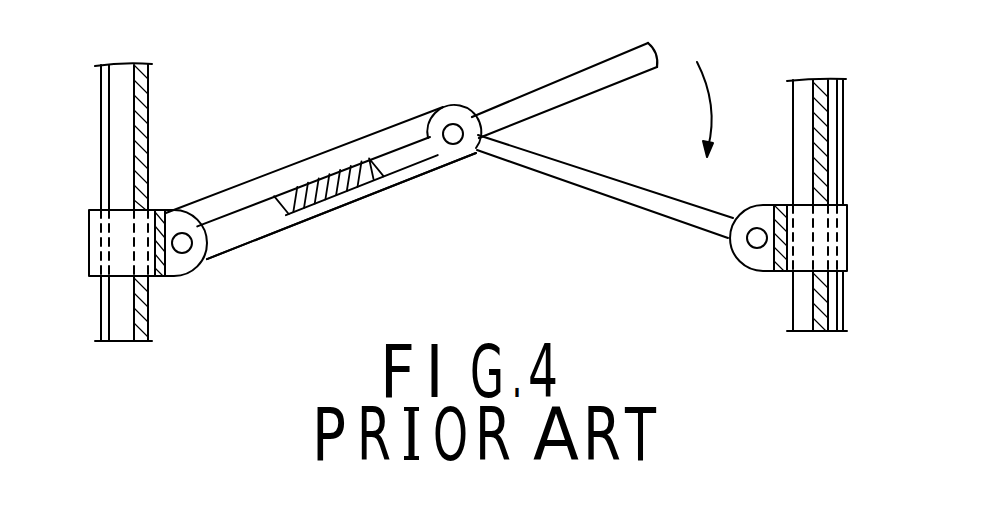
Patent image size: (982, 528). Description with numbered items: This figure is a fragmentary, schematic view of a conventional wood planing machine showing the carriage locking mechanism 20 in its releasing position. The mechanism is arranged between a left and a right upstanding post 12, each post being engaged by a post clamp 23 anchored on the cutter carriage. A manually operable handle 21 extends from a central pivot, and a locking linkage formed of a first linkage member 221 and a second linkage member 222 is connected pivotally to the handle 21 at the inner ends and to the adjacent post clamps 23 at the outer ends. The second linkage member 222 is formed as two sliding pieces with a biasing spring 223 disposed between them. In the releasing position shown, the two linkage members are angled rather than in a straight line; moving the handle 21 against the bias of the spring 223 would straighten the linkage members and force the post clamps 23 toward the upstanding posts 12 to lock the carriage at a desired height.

The upstanding posts 12 is at (118, 76).
The carriage locking mechanism 20 is at (398, 121).
The manually operable handle 21 is at (516, 100).
The post clamps 23 is at (165, 278).
The first linkage member 221 is at (583, 186).
The second linkage member 222 is at (253, 250).
The biasing spring 223 is at (333, 185).